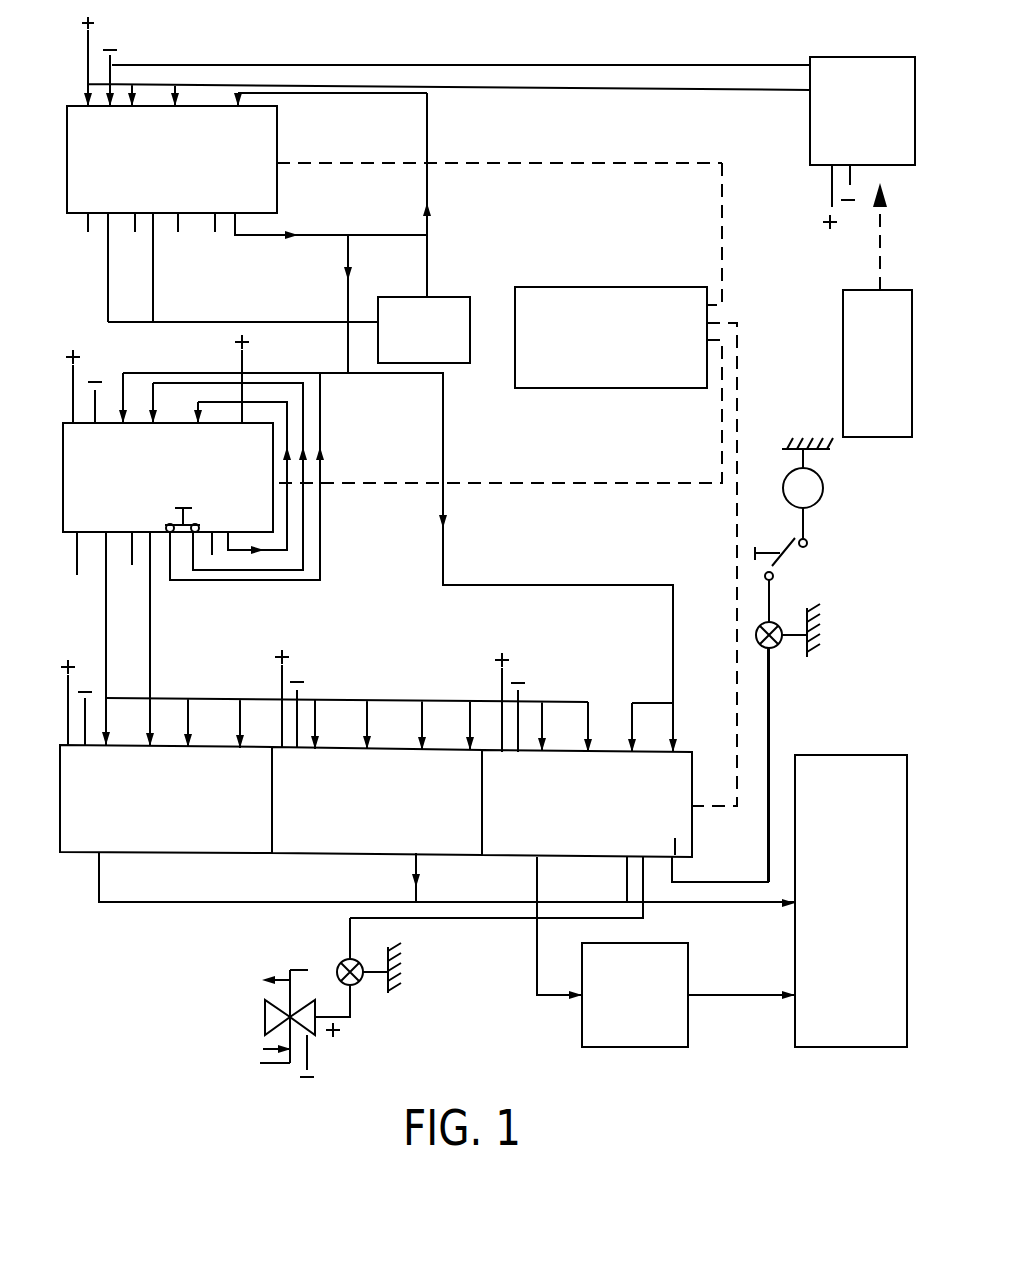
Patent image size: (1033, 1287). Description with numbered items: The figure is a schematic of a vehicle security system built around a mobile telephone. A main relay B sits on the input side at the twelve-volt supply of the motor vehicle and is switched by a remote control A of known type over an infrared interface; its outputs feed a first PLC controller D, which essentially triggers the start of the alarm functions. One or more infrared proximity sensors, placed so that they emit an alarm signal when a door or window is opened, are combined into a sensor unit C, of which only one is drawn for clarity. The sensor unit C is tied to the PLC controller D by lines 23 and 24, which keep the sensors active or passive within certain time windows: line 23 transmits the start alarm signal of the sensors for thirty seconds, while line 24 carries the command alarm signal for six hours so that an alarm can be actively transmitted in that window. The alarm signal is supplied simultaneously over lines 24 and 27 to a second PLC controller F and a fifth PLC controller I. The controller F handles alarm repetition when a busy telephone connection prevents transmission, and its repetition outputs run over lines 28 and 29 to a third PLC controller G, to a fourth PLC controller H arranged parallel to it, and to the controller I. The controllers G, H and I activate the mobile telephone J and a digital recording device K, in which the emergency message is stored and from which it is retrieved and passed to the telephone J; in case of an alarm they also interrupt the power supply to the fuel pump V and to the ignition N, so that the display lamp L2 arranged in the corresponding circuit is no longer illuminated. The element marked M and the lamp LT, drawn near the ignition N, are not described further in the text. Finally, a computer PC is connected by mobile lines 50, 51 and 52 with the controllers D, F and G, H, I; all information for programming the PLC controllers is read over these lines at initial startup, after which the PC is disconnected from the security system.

The line 23 is at (428, 163).
The line 24 is at (291, 235).
The line 27 is at (348, 300).
The line 28 is at (104, 590).
The line 29 is at (150, 648).
The mobile line 50 is at (720, 250).
The mobile line 51 is at (718, 410).
The mobile line 52 is at (737, 500).
The remote control A is at (877, 310).
The main relay B is at (862, 143).
The sensor unit C is at (424, 330).
The first PLC controller D is at (222, 214).
The second PLC controller F is at (193, 457).
The third PLC controller G is at (427, 826).
The fourth PLC controller H is at (377, 801).
The fifth PLC controller I is at (559, 823).
The mobile telephone J is at (851, 901).
The digital recording device K is at (688, 995).
The computer PC is at (611, 337).
The motor M is at (807, 488).
The ignition N is at (806, 555).
The lamp LT is at (773, 648).
The display lamp L2 is at (345, 960).
The fuel pump V is at (261, 1023).